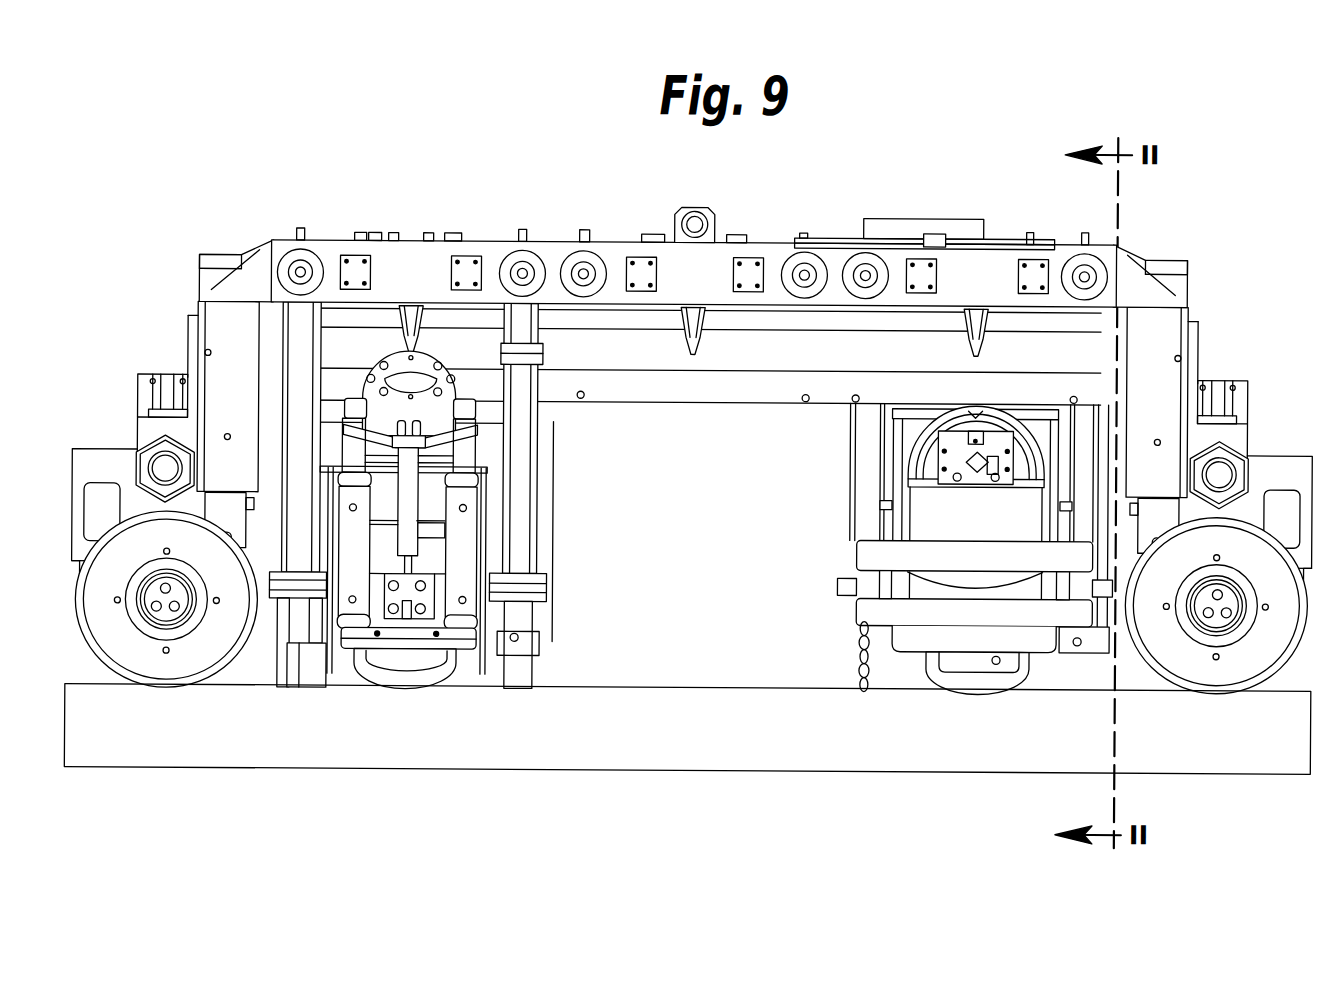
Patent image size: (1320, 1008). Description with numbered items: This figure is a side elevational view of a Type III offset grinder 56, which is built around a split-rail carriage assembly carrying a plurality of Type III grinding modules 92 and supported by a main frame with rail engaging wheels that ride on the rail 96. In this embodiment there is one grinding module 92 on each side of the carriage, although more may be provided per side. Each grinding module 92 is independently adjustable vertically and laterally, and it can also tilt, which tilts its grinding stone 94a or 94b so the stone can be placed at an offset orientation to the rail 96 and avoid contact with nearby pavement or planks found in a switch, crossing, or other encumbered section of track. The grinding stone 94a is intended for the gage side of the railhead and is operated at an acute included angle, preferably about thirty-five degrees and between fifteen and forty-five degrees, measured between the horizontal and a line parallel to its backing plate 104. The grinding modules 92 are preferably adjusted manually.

The Type III offset grinder 56 is at (905, 163).
The Type III grinding module 92 is at (465, 535).
The grinding stone 94a is at (403, 680).
The grinding stone 94b is at (993, 684).
The rail 96 is at (178, 748).
The backing plate 104 is at (455, 678).